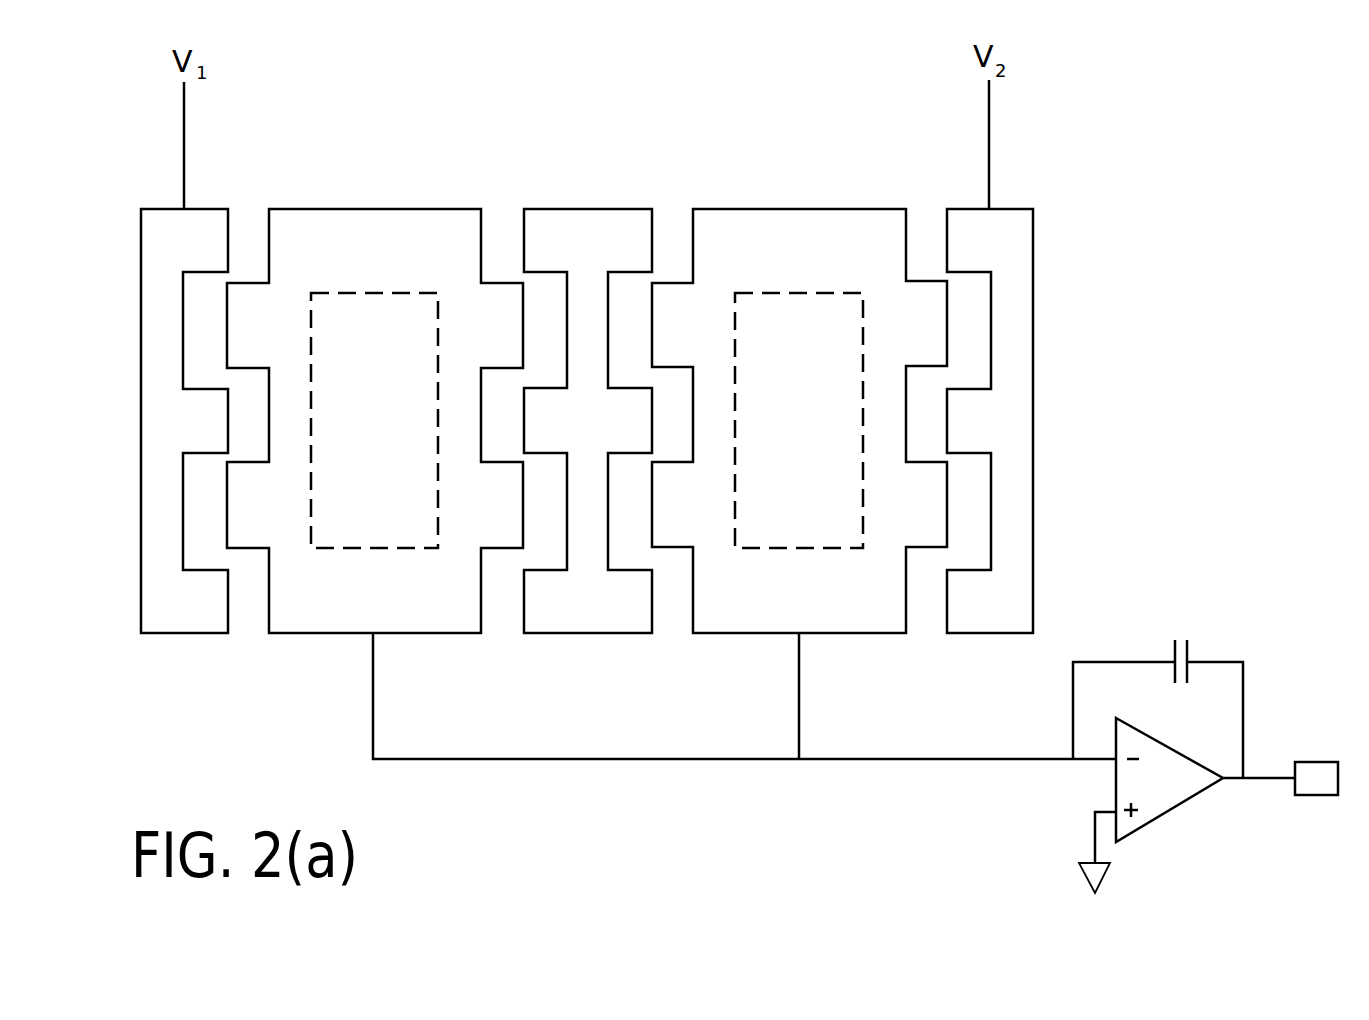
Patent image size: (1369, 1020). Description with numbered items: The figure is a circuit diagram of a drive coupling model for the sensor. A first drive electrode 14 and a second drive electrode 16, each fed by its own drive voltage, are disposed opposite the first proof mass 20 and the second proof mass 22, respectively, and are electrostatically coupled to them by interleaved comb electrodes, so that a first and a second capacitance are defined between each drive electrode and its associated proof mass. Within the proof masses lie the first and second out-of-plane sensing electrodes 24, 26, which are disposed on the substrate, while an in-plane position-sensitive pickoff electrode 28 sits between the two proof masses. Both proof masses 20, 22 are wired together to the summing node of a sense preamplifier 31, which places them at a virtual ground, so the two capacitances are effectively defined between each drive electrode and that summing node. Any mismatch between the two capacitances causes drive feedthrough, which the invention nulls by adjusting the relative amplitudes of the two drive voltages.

The first drive electrode 14 is at (140, 472).
The second drive electrode 16 is at (1033, 460).
The first proof mass 20 is at (318, 612).
The second proof mass 22 is at (856, 603).
The first out-of-plane sensing electrode 24 is at (390, 432).
The second out-of-plane sensing electrode 26 is at (815, 424).
The in-plane position-sensitive pickoff electrode 28 is at (604, 434).
The sense preamplifier 31 is at (1042, 848).